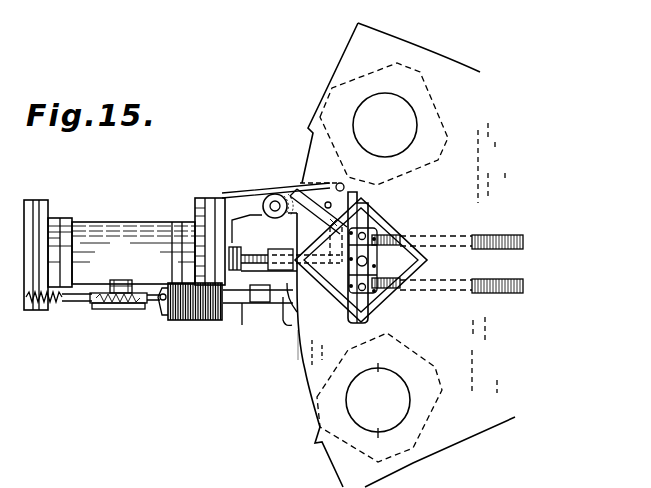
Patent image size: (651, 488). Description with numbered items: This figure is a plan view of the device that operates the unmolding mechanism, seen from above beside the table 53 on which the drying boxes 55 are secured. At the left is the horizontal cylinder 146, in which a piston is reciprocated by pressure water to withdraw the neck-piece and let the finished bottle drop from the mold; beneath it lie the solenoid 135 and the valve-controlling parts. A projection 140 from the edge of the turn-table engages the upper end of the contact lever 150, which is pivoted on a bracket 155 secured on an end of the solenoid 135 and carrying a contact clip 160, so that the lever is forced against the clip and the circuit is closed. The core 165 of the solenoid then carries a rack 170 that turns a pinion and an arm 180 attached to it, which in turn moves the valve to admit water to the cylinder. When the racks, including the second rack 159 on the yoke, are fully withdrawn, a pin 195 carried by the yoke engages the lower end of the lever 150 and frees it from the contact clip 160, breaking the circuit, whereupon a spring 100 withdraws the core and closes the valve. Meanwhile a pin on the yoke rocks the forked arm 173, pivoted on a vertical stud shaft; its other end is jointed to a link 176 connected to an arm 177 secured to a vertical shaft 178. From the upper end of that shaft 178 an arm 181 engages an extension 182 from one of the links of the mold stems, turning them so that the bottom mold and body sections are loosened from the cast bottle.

The table 53 is at (340, 64).
The projection 140 is at (308, 128).
The horizontal cylinder 146 is at (110, 214).
The spring 100 is at (53, 301).
The rack 170 is at (77, 303).
The arm 180 is at (107, 309).
The core 165 is at (157, 303).
The solenoid 135 is at (192, 320).
The contact lever 150 is at (244, 290).
The bracket 155 is at (242, 312).
The contact clip 160 is at (298, 336).
The vertical shaft 178 is at (263, 208).
The arm 177 is at (275, 187).
The link 176 is at (302, 183).
The arm 181 is at (344, 184).
The arm 173 is at (318, 211).
The extension 182 is at (370, 192).
The drying box 55 is at (398, 302).
The second rack 159 is at (513, 280).
The pin 195 is at (347, 343).